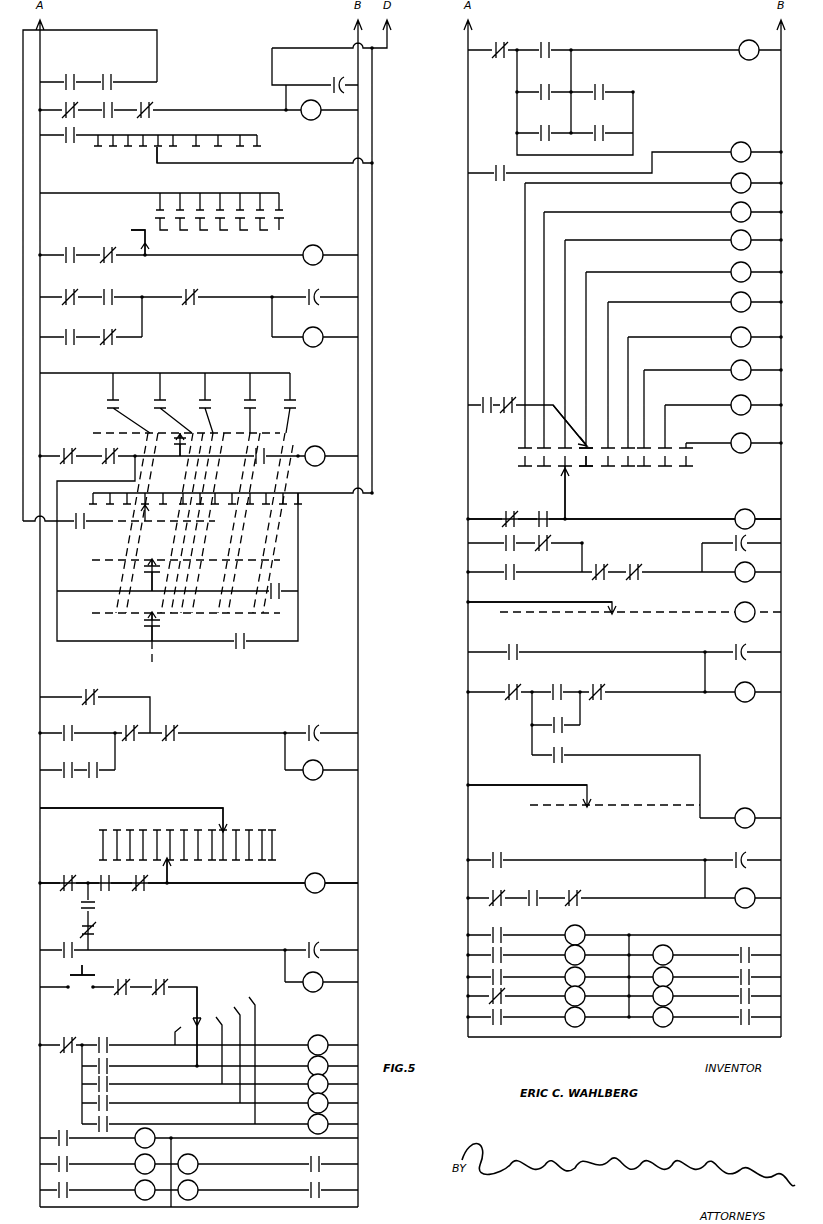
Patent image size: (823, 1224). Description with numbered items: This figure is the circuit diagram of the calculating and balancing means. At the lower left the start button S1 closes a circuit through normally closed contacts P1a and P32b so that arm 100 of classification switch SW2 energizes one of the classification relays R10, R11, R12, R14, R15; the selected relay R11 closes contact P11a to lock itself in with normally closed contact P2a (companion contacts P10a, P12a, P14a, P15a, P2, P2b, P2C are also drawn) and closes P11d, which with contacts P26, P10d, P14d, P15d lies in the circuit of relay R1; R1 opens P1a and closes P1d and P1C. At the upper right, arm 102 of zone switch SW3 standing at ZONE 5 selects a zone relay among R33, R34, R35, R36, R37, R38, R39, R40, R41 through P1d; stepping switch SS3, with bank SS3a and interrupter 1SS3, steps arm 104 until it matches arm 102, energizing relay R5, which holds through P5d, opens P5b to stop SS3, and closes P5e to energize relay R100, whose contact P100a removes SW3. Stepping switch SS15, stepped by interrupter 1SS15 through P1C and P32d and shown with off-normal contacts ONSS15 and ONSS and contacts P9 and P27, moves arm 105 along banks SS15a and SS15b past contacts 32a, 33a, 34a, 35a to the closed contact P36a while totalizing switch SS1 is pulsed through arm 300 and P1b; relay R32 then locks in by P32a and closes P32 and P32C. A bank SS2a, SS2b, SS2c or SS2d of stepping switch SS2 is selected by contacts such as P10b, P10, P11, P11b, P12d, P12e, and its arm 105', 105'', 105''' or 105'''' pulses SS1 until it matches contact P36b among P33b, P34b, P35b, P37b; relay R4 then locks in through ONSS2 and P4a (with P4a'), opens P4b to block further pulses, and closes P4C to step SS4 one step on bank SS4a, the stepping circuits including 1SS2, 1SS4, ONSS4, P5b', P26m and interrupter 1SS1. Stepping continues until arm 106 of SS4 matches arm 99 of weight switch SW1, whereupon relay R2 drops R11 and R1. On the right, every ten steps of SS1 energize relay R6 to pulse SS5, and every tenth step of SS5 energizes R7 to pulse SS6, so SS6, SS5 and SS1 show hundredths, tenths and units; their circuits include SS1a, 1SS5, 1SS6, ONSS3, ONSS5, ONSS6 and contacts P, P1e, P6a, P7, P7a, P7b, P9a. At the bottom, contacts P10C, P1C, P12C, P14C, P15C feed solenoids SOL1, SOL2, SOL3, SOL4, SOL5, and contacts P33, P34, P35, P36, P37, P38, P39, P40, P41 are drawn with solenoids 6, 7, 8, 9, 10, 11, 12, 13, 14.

The normally closed contact P1a is at (70, 75).
The contact P32 is at (107, 75).
The ONSS contact ONSS is at (60, 104).
The P9 contact P9 is at (557, 685).
The 1SS1 contact 1SS1 is at (147, 100).
The totalizing switch SS1 is at (322, 98).
The contact P1b is at (68, 143).
The SS15a stepping switch bank SS15a is at (203, 145).
The arm 300 is at (155, 155).
The contact 32a is at (157, 215).
The contact 33a is at (178, 196).
The contact 34a is at (199, 196).
The contact 35a is at (220, 196).
The contact P36a is at (242, 196).
The SS15b switch bank SS15b is at (227, 241).
The normally open contact P32a is at (70, 248).
The P27 contact P27 is at (108, 248).
The arm 105 is at (151, 242).
The relay R32 is at (313, 246).
The contact P32d is at (70, 289).
The contact P1C is at (108, 289).
The interrupter switch 1SS15 is at (190, 289).
The ONSS15 contact ONSS15 is at (108, 345).
The stepping switch SS15 is at (313, 347).
The P33b contact P33b is at (106, 399).
The P34b contact P34b is at (153, 399).
The P35b contact P35b is at (198, 399).
The contact P36b is at (243, 399).
The contact P37b is at (284, 399).
The bank of contacts SS2a is at (213, 421).
The off normal contacts ONSS2 is at (90, 689).
The P4a' contact P4a' is at (104, 463).
The P10 contact P10 is at (176, 452).
The arm 105' is at (199, 444).
The contact P10b is at (262, 449).
The relay R4 is at (318, 450).
The bank of contacts SS2b is at (292, 499).
The contact P4a is at (74, 529).
The wiper 105'' is at (160, 527).
The bank of contacts SS2c is at (290, 559).
The contact P11 is at (142, 580).
The arm 105''' is at (182, 575).
The contact P11b is at (275, 584).
The bank of contacts SS2d is at (291, 608).
The wiper 105'''' is at (124, 637).
The P12e contact P12e is at (160, 626).
The P12d contact P12d is at (245, 650).
The contact P4b is at (68, 725).
The P2b contact P2b is at (130, 725).
The 1SS2 contact 1SS2 is at (168, 720).
The stepping switch SS2 is at (315, 761).
The contact P5b' is at (67, 779).
The contact P32C is at (93, 778).
The arm 99 is at (200, 808).
The weight switch SW1 is at (241, 824).
The ONSS4 contact ONSS4 is at (63, 876).
The P2 contact P2 is at (105, 877).
The arm 106 is at (168, 872).
The SS4a switch bank SS4a is at (273, 872).
The relay R2 is at (315, 895).
The P26m contact P26m is at (97, 905).
The 1SS4 contact 1SS4 is at (96, 930).
The contact P4C is at (68, 943).
The stepping switch SS4 is at (313, 992).
The start button S1 is at (70, 975).
The normally closed contact P32b is at (160, 978).
The arm 100 is at (191, 1009).
The classification switch SW2 is at (211, 990).
The normally closed contact P2a is at (68, 1038).
The P10a contact P10a is at (107, 1038).
The normally open contact P11a is at (107, 1060).
The P12a contact P12a is at (107, 1078).
The P14a contact P14a is at (107, 1097).
The P15a contact P15a is at (107, 1118).
The classification relay R10 is at (310, 1038).
The classification relay R11 is at (310, 1060).
The classification relay R12 is at (310, 1078).
The classification relay R14 is at (310, 1098).
The classification relay R15 is at (310, 1118).
The P10C contact P10C is at (63, 1130).
The solenoid 1 SOL1 is at (140, 1132).
The solenoid 2 SOL2 is at (145, 1170).
The solenoid 3 SOL3 is at (145, 1196).
The solenoid 4 SOL4 is at (190, 1158).
The solenoid 5 SOL5 is at (190, 1186).
The P12C contact P12C is at (67, 1186).
The P14C contact P14C is at (313, 1156).
The P15C contact P15C is at (313, 1183).
The P26 contact P26 is at (500, 42).
The P10d contact P10d is at (545, 42).
The relay R1 is at (749, 40).
The contact P11d is at (545, 84).
The P14d contact P14d is at (599, 84).
The P15d contact P15d is at (599, 126).
The contact P5e is at (500, 181).
The relay R100 is at (741, 142).
The relay R33 is at (733, 181).
The relay R34 is at (733, 210).
The relay R35 is at (733, 238).
The zone relay R36 is at (733, 270).
The relay R37 is at (733, 300).
The zone relay R38 is at (733, 334).
The relay R39 is at (733, 366).
The relay R40 is at (733, 401).
The relay R41 is at (733, 437).
The contact P1d is at (478, 396).
The normally closed contact P100a is at (510, 392).
The zone switch SW3 is at (517, 439).
The arm 102 is at (590, 447).
The zone 5 position ZONE 5 is at (596, 471).
The arm 104 is at (566, 498).
The P2C contact P2C is at (510, 512).
The normally open contact P5d is at (543, 512).
The SS3a switch bank SS3a is at (624, 506).
The relay R5 is at (752, 506).
The P contact P is at (507, 537).
The ONSS3 contact ONSS3 is at (545, 537).
The P1e contact P1e is at (510, 582).
The normally closed contact P5b is at (600, 564).
The interrupted contact switch 1SS3 is at (634, 565).
The stepping switch SS3 is at (745, 584).
The SS1a switch bank SS1a is at (510, 603).
The relay R6 is at (745, 624).
The P6a contact P6a is at (513, 645).
The ONSS5 contact ONSS5 is at (513, 685).
The 1SS5 contact 1SS5 is at (597, 685).
The stepping switch SS5 is at (745, 704).
The P7 contact P7 is at (560, 732).
The P7a contact P7a is at (560, 762).
The relay R7 is at (745, 808).
The P7b contact P7b is at (497, 853).
The ONSS6 contact ONSS6 is at (497, 890).
The P9a contact P9a is at (533, 890).
The 1SS6 contact 1SS6 is at (573, 890).
The stepping switch SS6 is at (745, 910).
The P33 contact P33 is at (502, 929).
The P34 contact P34 is at (502, 950).
The P35 contact P35 is at (502, 972).
The P36 contact P36 is at (502, 991).
The P37 contact P37 is at (502, 1012).
The solenoid 6 is at (585, 929).
The solenoid 7 is at (578, 954).
The solenoid 8 is at (578, 976).
The solenoid 9 is at (578, 995).
The solenoid 10 is at (578, 1016).
The solenoid 11 is at (663, 944).
The solenoid 12 is at (656, 976).
The solenoid 13 is at (656, 995).
The solenoid 14 is at (656, 1016).
The P38 contact P38 is at (743, 948).
The P39 contact P39 is at (743, 970).
The P40 contact P40 is at (743, 989).
The P41 contact P41 is at (743, 1010).